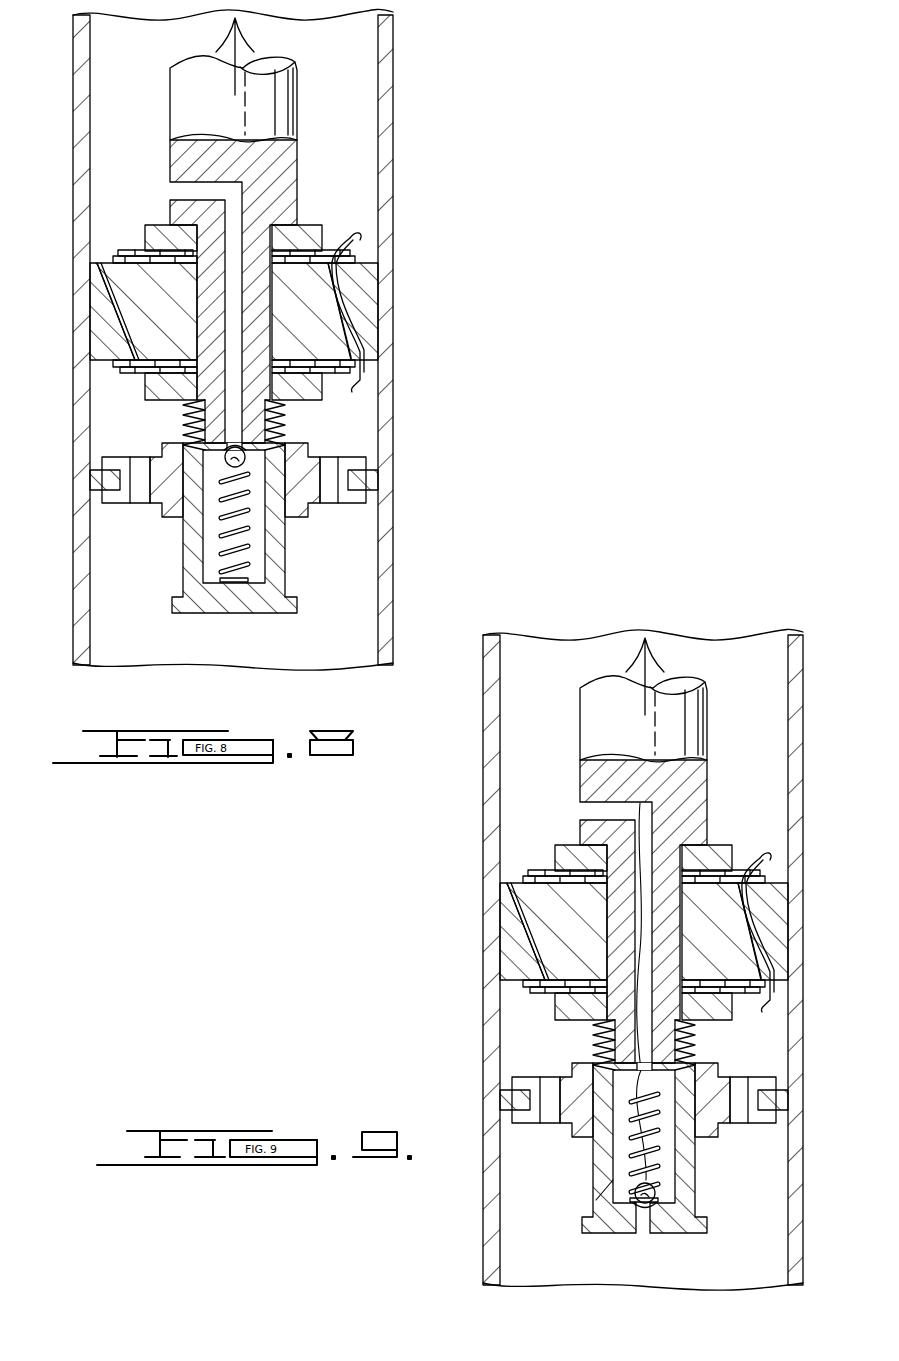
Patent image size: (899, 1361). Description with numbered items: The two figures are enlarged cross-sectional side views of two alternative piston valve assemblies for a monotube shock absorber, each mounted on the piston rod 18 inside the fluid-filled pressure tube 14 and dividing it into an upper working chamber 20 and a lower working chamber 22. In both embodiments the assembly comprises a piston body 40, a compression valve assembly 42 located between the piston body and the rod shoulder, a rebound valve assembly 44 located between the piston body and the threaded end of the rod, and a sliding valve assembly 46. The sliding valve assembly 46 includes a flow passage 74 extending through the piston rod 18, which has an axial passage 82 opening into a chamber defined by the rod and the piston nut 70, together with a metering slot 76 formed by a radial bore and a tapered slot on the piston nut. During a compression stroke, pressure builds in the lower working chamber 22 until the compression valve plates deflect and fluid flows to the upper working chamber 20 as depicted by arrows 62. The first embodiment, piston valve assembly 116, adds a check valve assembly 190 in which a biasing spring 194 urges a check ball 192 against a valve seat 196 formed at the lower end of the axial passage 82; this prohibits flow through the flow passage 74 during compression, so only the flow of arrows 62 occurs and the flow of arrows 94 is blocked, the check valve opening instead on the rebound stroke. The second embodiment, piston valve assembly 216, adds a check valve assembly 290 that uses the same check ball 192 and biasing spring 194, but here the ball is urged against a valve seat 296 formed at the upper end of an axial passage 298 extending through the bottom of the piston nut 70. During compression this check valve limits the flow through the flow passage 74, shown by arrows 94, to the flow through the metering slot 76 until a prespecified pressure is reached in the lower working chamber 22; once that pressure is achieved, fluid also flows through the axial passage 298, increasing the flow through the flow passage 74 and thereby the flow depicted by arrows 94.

In FIG. 8, the pressure tube 14 is at (385, 221).
In FIG. 9, the pressure tube 14 is at (665, 960).
In FIG. 8, the piston rod 18 is at (214, 121).
In FIG. 8, the upper working chamber 20 is at (346, 66).
In FIG. 9, the upper working chamber 20 is at (643, 667).
In FIG. 8, the lower working chamber 22 is at (240, 659).
In FIG. 9, the lower working chamber 22 is at (643, 1269).
In FIG. 8, the piston body 40 is at (100, 297).
In FIG. 8, the compression valve assembly 42 is at (128, 223).
In FIG. 8, the rebound valve assembly 44 is at (117, 381).
In FIG. 8, the sliding valve assembly 46 is at (131, 524).
In FIG. 8, the arrows 62 is at (365, 372).
In FIG. 9, the arrows 62 is at (797, 935).
In FIG. 9, the piston nut 70 is at (631, 1178).
In FIG. 8, the flow passage 74 is at (274, 212).
In FIG. 9, the flow passage 74 is at (715, 914).
In FIG. 9, the metering slot 76 is at (598, 1134).
In FIG. 8, the axial passage 82 is at (232, 319).
In FIG. 9, the arrows 94 is at (529, 1053).
In FIG. 8, the piston valve assembly 116 is at (245, 328).
In FIG. 8, the check valve assembly 190 is at (291, 500).
In FIG. 8, the check ball 192 is at (225, 455).
In FIG. 9, the check ball 192 is at (698, 1194).
In FIG. 8, the biasing spring 194 is at (245, 548).
In FIG. 9, the biasing spring 194 is at (585, 1115).
In FIG. 8, the valve seat 196 is at (248, 452).
In FIG. 9, the piston valve assembly 216 is at (630, 953).
In FIG. 9, the check valve assembly 290 is at (512, 1228).
In FIG. 9, the valve seat 296 is at (596, 1241).
In FIG. 9, the axial passage 298 is at (668, 1265).